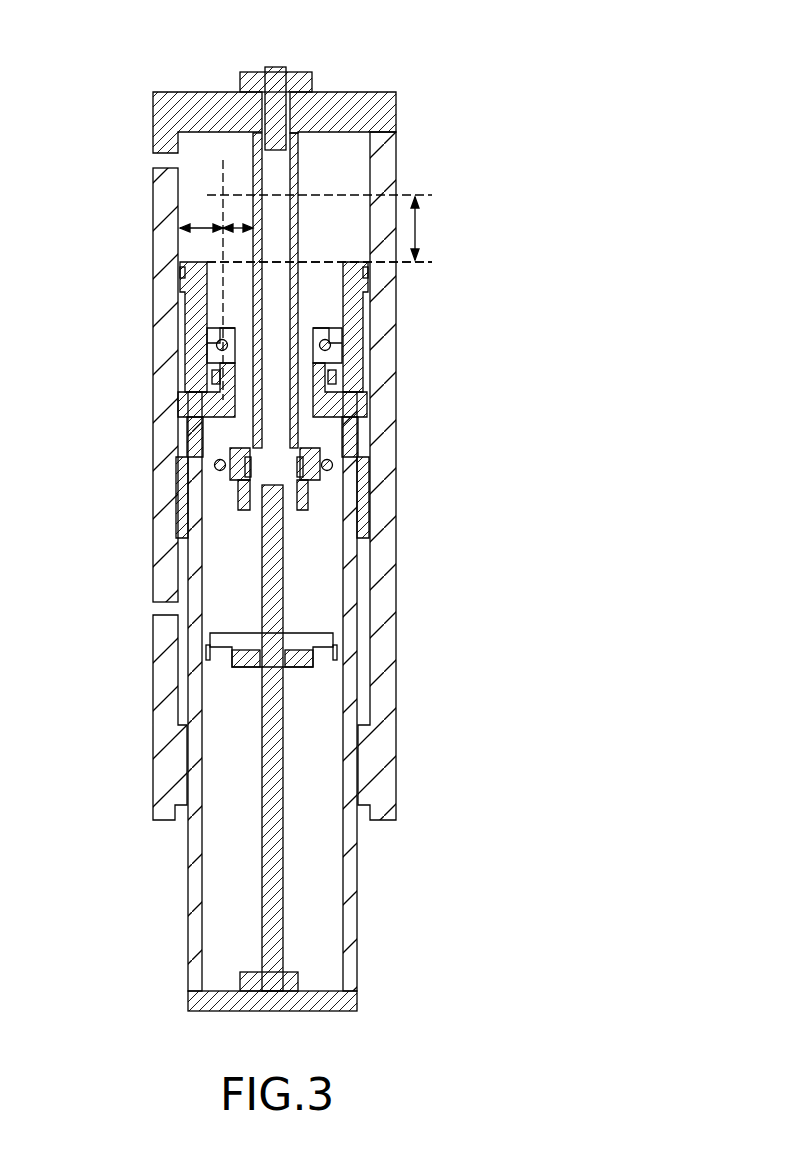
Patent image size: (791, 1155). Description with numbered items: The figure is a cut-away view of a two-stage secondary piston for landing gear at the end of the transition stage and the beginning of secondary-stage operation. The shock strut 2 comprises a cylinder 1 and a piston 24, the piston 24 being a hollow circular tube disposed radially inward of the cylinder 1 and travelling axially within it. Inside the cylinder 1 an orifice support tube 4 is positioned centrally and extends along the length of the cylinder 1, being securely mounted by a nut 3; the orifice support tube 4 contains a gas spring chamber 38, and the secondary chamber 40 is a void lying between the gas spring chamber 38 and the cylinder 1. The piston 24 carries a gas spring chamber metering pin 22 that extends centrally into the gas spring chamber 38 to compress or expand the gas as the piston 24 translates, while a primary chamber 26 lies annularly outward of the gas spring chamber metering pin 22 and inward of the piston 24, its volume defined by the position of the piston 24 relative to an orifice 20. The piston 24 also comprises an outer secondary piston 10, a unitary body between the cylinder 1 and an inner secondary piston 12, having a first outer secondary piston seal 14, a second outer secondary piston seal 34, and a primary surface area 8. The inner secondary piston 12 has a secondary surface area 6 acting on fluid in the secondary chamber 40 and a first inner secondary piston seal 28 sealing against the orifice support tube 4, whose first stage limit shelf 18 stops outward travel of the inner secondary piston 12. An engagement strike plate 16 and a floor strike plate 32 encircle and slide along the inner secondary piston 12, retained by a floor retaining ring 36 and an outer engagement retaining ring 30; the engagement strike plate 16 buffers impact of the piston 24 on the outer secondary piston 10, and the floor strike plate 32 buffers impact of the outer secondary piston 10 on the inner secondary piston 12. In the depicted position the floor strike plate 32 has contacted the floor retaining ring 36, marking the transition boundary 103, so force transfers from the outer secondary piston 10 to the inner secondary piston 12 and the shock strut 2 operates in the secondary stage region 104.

The cylinder 1 is at (157, 568).
The shock strut 2 is at (434, 63).
The nut 3 is at (240, 74).
The orifice support tube 4 is at (255, 148).
The secondary surface area 6 is at (239, 227).
The primary surface area 8 is at (200, 228).
The outer secondary piston 10 is at (195, 318).
The inner secondary piston 12 is at (195, 395).
The first outer secondary piston seal 14 is at (215, 383).
The engagement strike plate 16 is at (193, 422).
The first stage limit shelf 18 is at (252, 503).
The orifice 20 is at (210, 663).
The gas spring chamber metering pin 22 is at (272, 842).
The piston 24 is at (195, 887).
The primary chamber 26 is at (213, 973).
The first inner secondary piston seal 28 is at (245, 472).
The outer engagement retaining ring 30 is at (335, 475).
The floor strike plate 32 is at (207, 353).
The second outer secondary piston seal 34 is at (180, 277).
The floor retaining ring 36 is at (335, 343).
The gas spring chamber 38 is at (277, 185).
The secondary chamber 40 is at (287, 456).
The transition boundary 103 is at (396, 262).
The secondary stage region 104 is at (418, 228).